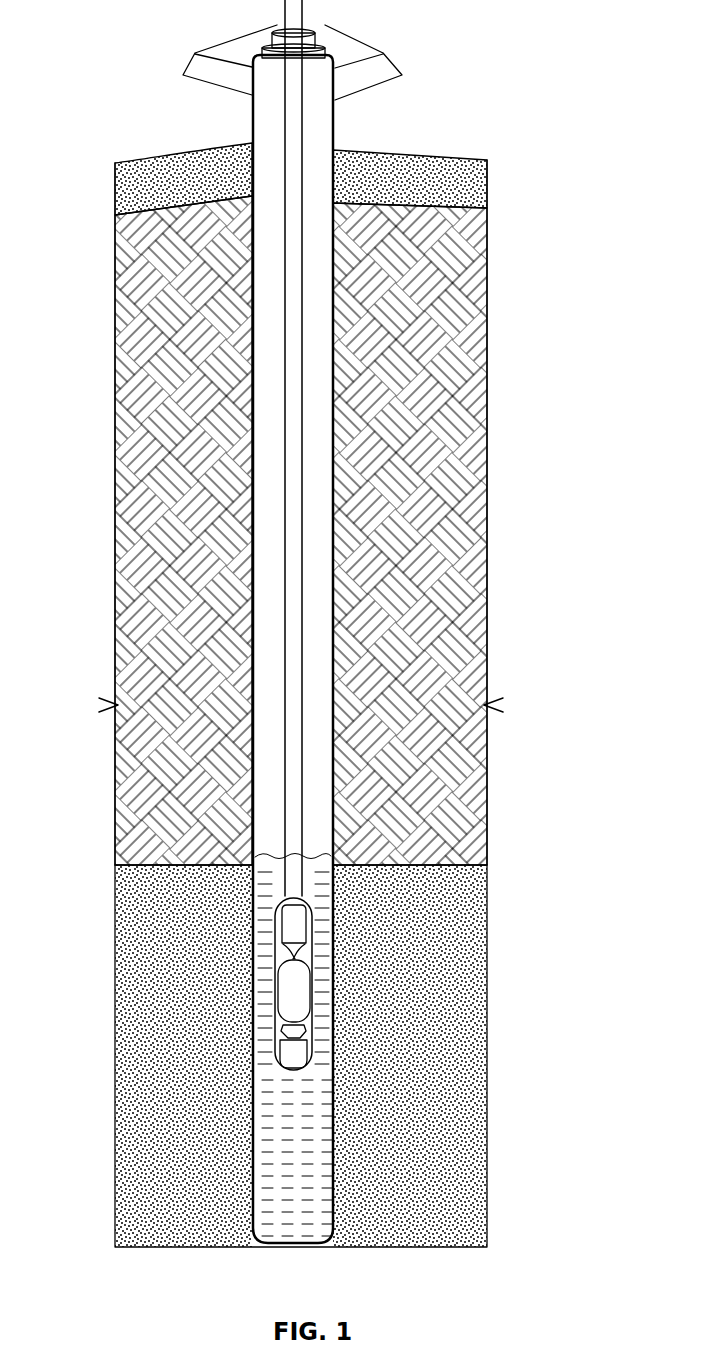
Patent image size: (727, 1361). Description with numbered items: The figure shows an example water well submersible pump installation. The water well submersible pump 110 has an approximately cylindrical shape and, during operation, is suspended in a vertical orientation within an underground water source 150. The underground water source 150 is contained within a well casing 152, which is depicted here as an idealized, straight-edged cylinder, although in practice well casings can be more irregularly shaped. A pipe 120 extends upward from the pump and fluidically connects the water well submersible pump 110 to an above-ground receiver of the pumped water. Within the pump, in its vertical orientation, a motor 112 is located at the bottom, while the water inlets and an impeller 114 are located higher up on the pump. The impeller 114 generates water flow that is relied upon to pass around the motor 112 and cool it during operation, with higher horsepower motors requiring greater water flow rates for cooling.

The water well submersible pump 110 is at (243, 905).
The motor 112 is at (295, 1047).
The impeller 114 is at (288, 920).
The pipe 120 is at (302, 491).
The underground water source 150 is at (303, 1133).
The well casing 152 is at (333, 302).